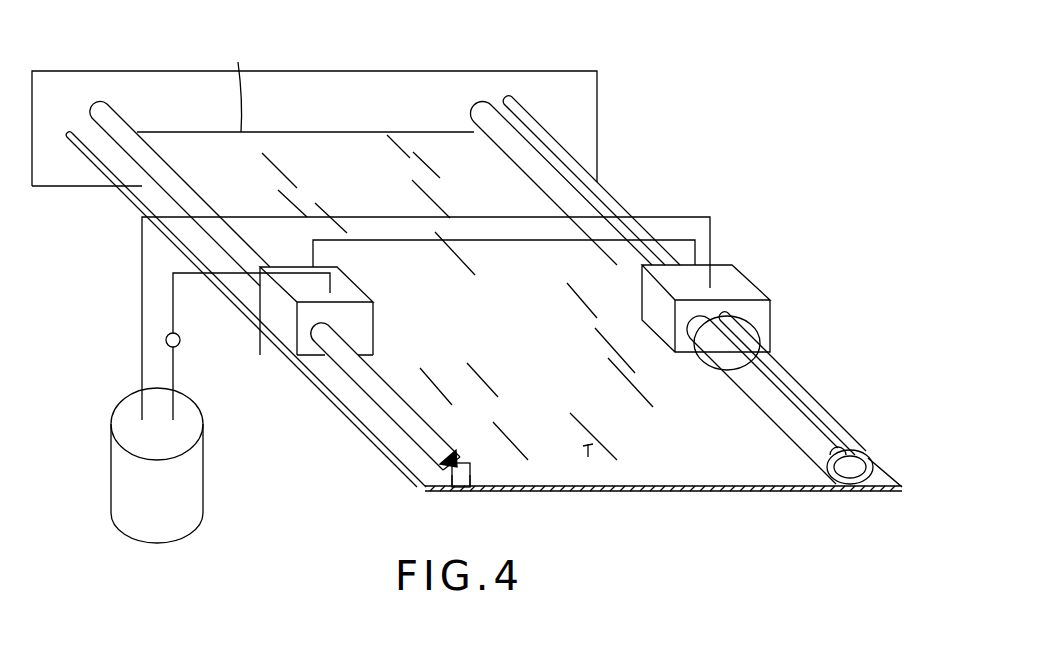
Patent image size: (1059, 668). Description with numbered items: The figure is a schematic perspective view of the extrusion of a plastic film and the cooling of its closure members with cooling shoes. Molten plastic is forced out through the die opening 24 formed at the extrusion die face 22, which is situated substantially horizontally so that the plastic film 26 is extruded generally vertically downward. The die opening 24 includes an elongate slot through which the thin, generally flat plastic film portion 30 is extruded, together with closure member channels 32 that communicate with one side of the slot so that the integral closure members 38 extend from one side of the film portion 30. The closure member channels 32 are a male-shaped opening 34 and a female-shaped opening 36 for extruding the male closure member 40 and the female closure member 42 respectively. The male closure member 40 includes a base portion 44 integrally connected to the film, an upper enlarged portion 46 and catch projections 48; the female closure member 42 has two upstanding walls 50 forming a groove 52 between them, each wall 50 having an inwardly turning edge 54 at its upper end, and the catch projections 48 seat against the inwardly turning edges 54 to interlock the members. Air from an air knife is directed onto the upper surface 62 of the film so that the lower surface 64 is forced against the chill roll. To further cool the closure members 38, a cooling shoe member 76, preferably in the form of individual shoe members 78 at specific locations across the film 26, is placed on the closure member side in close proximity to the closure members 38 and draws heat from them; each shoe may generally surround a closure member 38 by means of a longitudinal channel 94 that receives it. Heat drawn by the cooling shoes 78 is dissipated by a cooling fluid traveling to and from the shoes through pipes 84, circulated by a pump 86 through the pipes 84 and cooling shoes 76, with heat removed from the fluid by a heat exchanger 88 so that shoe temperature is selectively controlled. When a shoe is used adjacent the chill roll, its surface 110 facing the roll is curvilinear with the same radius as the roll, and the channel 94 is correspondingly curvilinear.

The extrusion die face 22 is at (187, 92).
The die opening 24 is at (322, 130).
The plastic film 26 is at (655, 456).
The plastic film portion 30 is at (135, 178).
The closure member channels 32 is at (92, 100).
The male-shaped opening 34 is at (103, 104).
The female-shaped opening 36 is at (480, 102).
The integral closure members 38 is at (138, 152).
The male closure member 40 is at (402, 460).
The female closure member 42 is at (803, 435).
The base portion 44 is at (458, 490).
The upper enlarged portion 46 is at (414, 478).
The catch projections 48 is at (446, 481).
The upstanding walls 50 is at (873, 461).
The groove 52 is at (851, 470).
The inwardly turning edge 54 is at (862, 452).
The upper surface 62 is at (589, 458).
The lower surface 64 is at (640, 491).
The cooling shoe member 76 is at (735, 258).
The individual shoe members 78 is at (738, 264).
The pipes 84 is at (668, 240).
The pump 86 is at (181, 340).
The heat exchanger 88 is at (118, 468).
The longitudinal channel 94 is at (340, 330).
The surface 110 is at (752, 342).